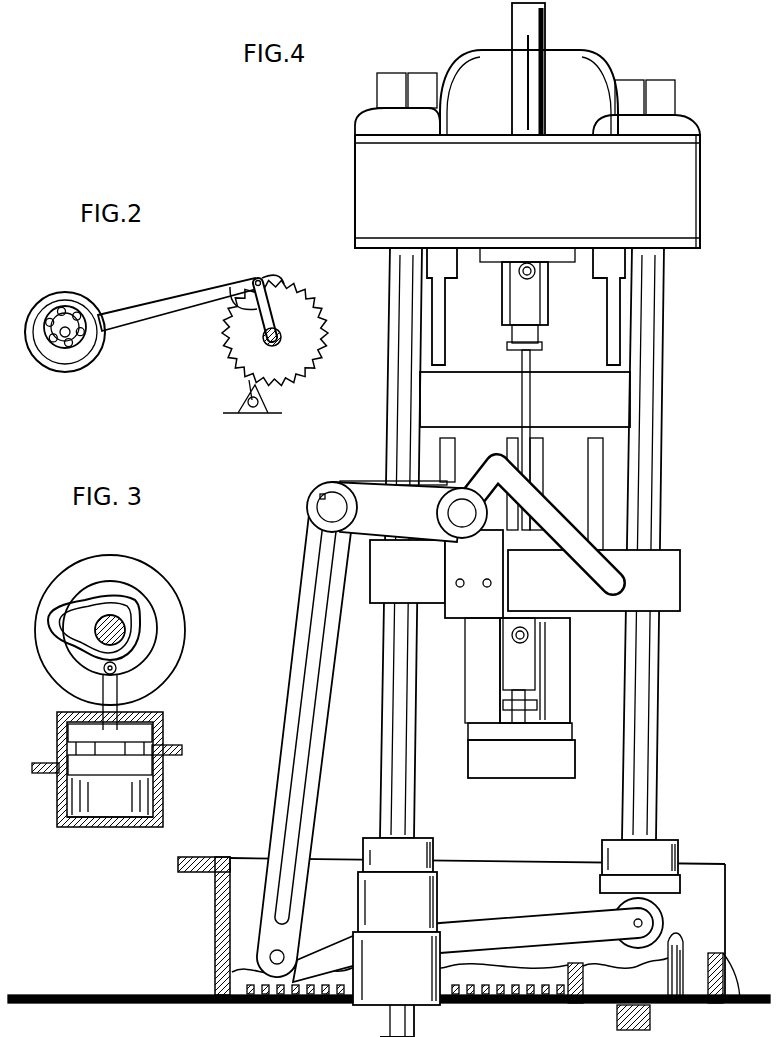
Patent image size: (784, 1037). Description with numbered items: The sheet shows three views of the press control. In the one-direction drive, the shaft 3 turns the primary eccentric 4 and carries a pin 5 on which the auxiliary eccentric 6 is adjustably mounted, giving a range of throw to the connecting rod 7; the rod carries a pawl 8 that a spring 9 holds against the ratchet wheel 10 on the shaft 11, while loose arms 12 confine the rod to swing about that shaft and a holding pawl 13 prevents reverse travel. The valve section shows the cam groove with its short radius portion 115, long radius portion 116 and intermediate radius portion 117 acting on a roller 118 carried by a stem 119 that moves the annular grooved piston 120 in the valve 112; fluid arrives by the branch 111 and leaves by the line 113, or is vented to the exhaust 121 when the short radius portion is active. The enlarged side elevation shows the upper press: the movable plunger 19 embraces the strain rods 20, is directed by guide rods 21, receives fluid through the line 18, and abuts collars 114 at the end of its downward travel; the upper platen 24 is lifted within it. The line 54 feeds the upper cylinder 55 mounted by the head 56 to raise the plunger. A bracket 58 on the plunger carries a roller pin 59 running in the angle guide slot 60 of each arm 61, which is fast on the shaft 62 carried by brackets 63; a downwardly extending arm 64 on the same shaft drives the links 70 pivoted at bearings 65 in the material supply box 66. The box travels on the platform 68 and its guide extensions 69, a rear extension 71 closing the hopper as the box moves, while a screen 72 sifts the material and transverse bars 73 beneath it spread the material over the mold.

In FIG. 2, the shaft 3 is at (80, 337).
In FIG. 2, the primary eccentric 4 is at (50, 305).
In FIG. 2, the pin 5 is at (75, 308).
In FIG. 2, the auxiliary eccentric 6 is at (95, 318).
In FIG. 2, the connecting rod 7 is at (137, 307).
In FIG. 2, the pawl 8 is at (278, 280).
In FIG. 2, the spring 9 is at (253, 277).
In FIG. 2, the ratchet wheel 10 is at (222, 325).
In FIG. 2, the shaft 11 is at (263, 339).
In FIG. 3, the shaft 11 is at (127, 630).
In FIG. 2, the loose arms 12 is at (245, 294).
In FIG. 2, the pawl 13 is at (245, 386).
In FIG. 4, the line 18 is at (530, 637).
In FIG. 4, the movable plunger 19 is at (672, 550).
In FIG. 4, the strain rods 20 is at (390, 395).
In FIG. 4, the guide rods 21 is at (531, 405).
In FIG. 4, the upper platen 24 is at (540, 780).
In FIG. 4, the line 54 is at (545, 272).
In FIG. 4, the upper cylinder 55 is at (468, 50).
In FIG. 4, the head 56 is at (430, 426).
In FIG. 4, the bracket 58 is at (505, 602).
In FIG. 4, the roller pin 59 is at (440, 514).
In FIG. 4, the angle guide slot 60 is at (625, 577).
In FIG. 4, the arm 61 is at (392, 540).
In FIG. 4, the shaft 62 is at (350, 502).
In FIG. 4, the brackets 63 is at (378, 482).
In FIG. 4, the arm 64 is at (340, 650).
In FIG. 4, the pivot bearings 65 is at (617, 907).
In FIG. 4, the material supply box 66 is at (503, 862).
In FIG. 4, the platform 68 is at (157, 993).
In FIG. 4, the guide extensions 69 is at (717, 957).
In FIG. 4, the links 70 is at (537, 913).
In FIG. 4, the rear extension 71 is at (193, 874).
In FIG. 4, the screen 72 is at (583, 975).
In FIG. 4, the transverse bars 73 is at (450, 990).
In FIG. 3, the branch 111 is at (43, 762).
In FIG. 3, the valve 112 is at (80, 827).
In FIG. 3, the line 113 is at (170, 757).
In FIG. 4, the collars 114 is at (420, 838).
In FIG. 3, the short radius portion 115 is at (157, 633).
In FIG. 3, the long radius portion 116 is at (47, 643).
In FIG. 3, the intermediate radius portion 117 is at (57, 598).
In FIG. 3, the roller 118 is at (133, 558).
In FIG. 3, the stem 119 is at (118, 692).
In FIG. 3, the annular grooved piston 120 is at (160, 730).
In FIG. 3, the exhaust 121 is at (67, 737).